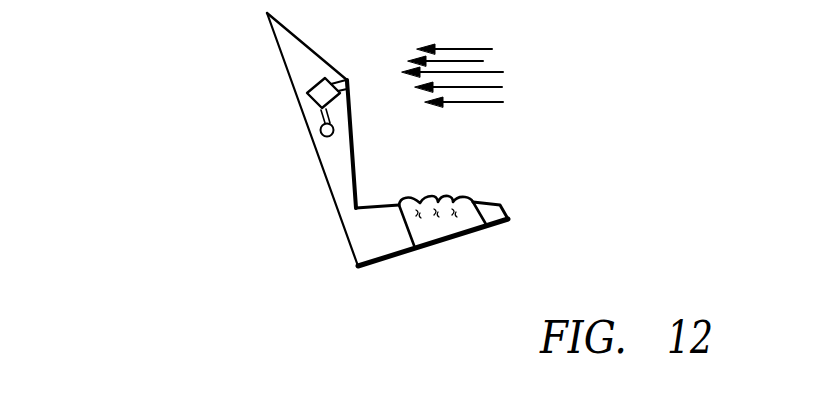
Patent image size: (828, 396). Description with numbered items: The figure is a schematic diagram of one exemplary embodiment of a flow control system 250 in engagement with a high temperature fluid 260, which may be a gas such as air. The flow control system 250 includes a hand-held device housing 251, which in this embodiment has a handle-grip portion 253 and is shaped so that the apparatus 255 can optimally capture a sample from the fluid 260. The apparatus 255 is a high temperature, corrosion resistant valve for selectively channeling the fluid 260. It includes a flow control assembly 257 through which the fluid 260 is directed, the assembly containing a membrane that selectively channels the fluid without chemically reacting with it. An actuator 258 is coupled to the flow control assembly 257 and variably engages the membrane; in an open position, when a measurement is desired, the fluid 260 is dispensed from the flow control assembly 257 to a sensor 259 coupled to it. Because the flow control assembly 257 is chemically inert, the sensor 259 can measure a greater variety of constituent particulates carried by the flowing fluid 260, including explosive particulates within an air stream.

The flow control system 250 is at (158, 95).
The hand-held device housing 251 is at (345, 202).
The handle-grip portion 253 is at (468, 222).
The apparatus 255 is at (320, 96).
The flow control assembly 257 is at (348, 78).
The actuator 258 is at (322, 95).
The sensor 259 is at (320, 136).
The high temperature fluid 260 is at (479, 75).